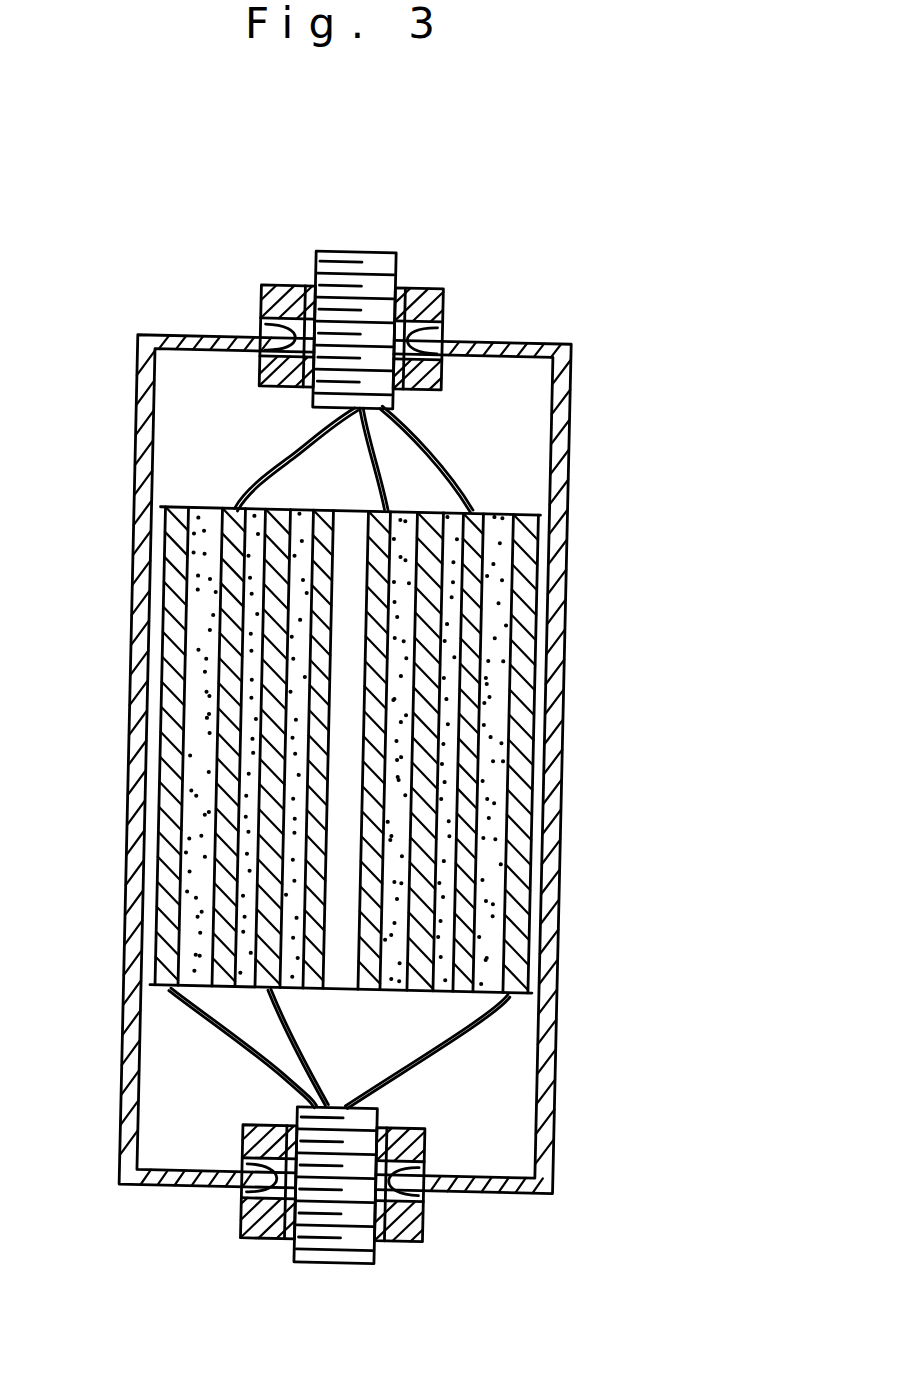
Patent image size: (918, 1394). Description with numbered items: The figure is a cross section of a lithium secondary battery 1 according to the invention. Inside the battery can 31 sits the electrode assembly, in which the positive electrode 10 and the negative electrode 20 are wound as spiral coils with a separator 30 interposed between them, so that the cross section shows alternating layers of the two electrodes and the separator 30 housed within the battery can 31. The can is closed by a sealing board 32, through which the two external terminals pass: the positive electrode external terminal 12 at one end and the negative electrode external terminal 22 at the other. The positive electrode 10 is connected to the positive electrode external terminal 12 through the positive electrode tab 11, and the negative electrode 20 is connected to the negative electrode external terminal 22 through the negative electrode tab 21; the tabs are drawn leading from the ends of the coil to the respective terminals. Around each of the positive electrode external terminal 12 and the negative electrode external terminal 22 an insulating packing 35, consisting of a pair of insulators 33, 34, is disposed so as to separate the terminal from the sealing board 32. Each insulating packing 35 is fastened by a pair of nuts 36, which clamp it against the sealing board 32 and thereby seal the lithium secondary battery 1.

The lithium secondary battery 1 is at (576, 608).
The positive electrode 10 is at (467, 933).
The negative electrode 20 is at (523, 682).
The separator 30 is at (494, 835).
The positive electrode tab 11 is at (261, 464).
The negative electrode tab 21 is at (258, 1057).
The positive electrode external terminal 12 is at (358, 258).
The negative electrode external terminal 22 is at (341, 1266).
The battery can 31 is at (131, 795).
The sealing board 32 is at (539, 339).
The insulator 33 is at (258, 327).
The insulator 34 is at (254, 339).
The insulating packing 35 is at (117, 247).
The nut 36 is at (279, 294).